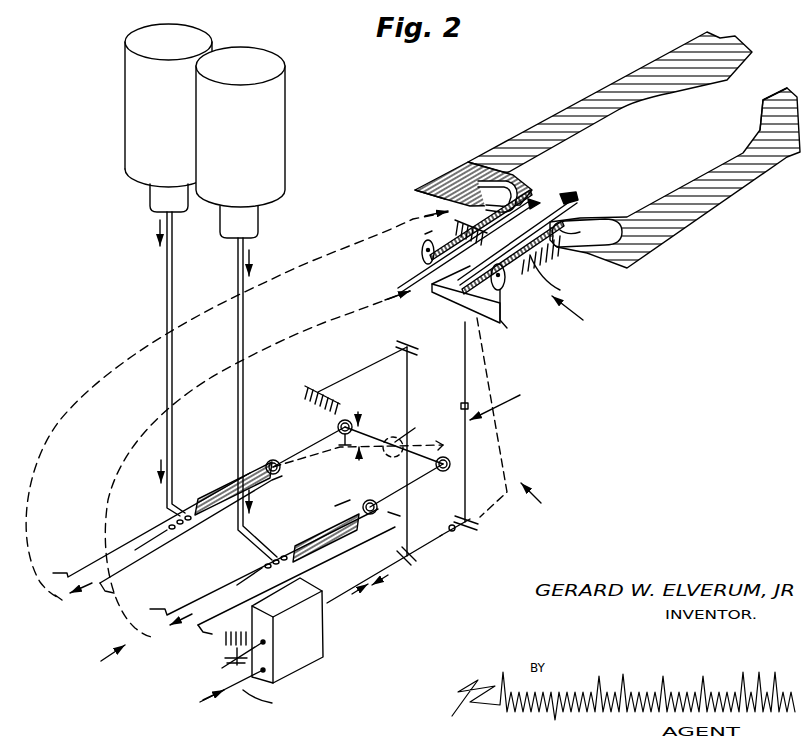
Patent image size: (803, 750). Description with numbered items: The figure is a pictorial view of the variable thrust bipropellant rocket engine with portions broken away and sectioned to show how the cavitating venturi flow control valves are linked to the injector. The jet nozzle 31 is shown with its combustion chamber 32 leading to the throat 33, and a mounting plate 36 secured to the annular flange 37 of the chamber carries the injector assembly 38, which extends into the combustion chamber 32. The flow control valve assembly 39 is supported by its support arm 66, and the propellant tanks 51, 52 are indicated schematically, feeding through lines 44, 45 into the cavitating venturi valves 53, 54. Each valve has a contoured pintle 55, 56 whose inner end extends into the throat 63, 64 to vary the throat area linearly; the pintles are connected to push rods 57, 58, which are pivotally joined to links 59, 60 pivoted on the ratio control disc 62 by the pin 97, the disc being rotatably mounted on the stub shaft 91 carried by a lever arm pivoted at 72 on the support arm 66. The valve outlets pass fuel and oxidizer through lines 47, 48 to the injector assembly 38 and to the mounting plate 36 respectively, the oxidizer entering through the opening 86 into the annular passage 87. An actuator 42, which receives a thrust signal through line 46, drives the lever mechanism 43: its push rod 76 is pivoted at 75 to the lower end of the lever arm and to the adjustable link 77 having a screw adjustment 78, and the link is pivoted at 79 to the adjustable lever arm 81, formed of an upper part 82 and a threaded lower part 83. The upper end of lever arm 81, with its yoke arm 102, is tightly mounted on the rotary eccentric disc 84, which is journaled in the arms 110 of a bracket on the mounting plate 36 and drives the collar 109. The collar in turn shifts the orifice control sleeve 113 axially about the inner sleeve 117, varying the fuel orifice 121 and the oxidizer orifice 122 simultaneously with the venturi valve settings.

The jet nozzle 31 is at (607, 90).
The combustion chamber 32 is at (647, 158).
The throat 33 is at (756, 88).
The mounting plate 36 is at (422, 185).
The annular flange 37 is at (460, 170).
The injector assembly 38 is at (607, 345).
The flow control valve assembly 39 is at (98, 678).
The actuator 42 is at (309, 643).
The lever mechanism 43 is at (591, 500).
The line 44 is at (237, 258).
The line 45 is at (166, 262).
The line 46 is at (233, 693).
The fuel line 47 is at (146, 642).
The oxidizer line 48 is at (56, 606).
The propellant tank 51 is at (174, 117).
The propellant tank 52 is at (251, 137).
The cavitating venturi valve 53 is at (208, 503).
The cavitating venturi valve 54 is at (307, 546).
The contoured pintle 55 is at (190, 517).
The contoured pintle 56 is at (290, 565).
The push rod 57 is at (266, 468).
The push rod 58 is at (365, 508).
The link 59 is at (322, 447).
The link 60 is at (421, 451).
The ratio control disc 62 is at (398, 452).
The throat 63 is at (156, 538).
The throat 64 is at (257, 573).
The support arm 66 is at (372, 379).
The pivot 72 is at (407, 343).
The pivot 75 is at (408, 566).
The push rod 76 is at (336, 604).
The adjustable link 77 is at (432, 540).
The screw adjustment 78 is at (456, 532).
The pivot 79 is at (482, 521).
The adjustable lever arm 81 is at (502, 396).
The upper part 82 is at (465, 370).
The lower part 83 is at (466, 455).
The rotary eccentric disc 84 is at (505, 286).
The opening 86 is at (470, 198).
The annular passage 87 is at (606, 220).
The stub shaft 91 is at (402, 436).
The pin 97 is at (360, 418).
The arm 102 is at (512, 323).
The collar 109 is at (414, 259).
The arms 110 is at (567, 276).
The orifice control sleeve 113 is at (448, 238).
The inner sleeve 117 is at (466, 294).
The fuel orifice 121 is at (560, 191).
The oxidizer orifice 122 is at (526, 198).